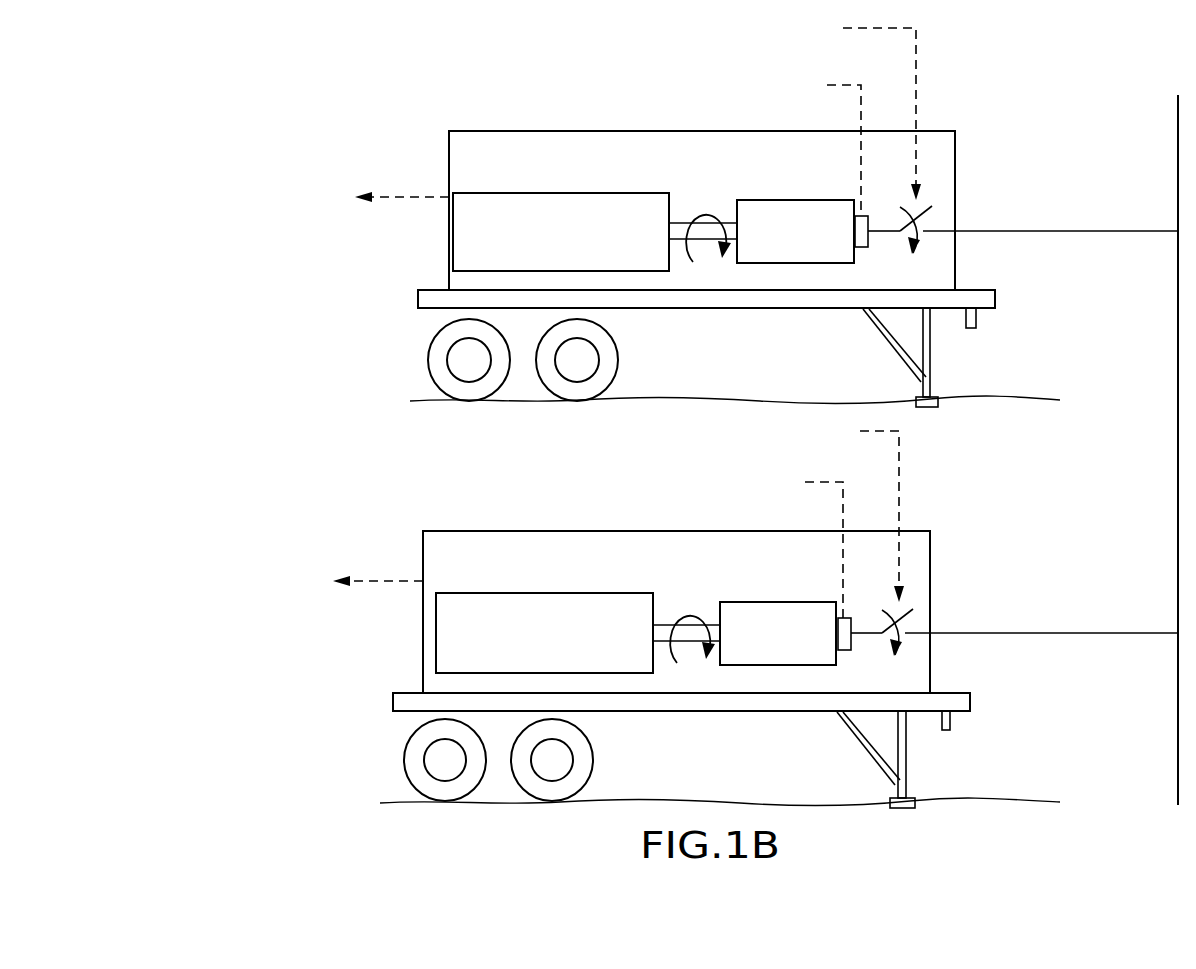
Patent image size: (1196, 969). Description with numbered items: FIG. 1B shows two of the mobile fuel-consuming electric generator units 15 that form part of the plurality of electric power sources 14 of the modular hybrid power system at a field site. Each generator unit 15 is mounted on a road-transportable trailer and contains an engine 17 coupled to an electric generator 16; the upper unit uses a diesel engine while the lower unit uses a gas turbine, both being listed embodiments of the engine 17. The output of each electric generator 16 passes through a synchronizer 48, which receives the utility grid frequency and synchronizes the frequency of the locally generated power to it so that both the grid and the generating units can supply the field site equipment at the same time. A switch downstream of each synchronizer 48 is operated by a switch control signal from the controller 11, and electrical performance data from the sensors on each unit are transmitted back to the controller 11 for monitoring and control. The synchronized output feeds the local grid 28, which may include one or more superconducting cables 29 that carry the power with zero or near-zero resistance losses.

The electric power sources 14 is at (306, 120).
The controller 11 is at (503, 315).
The mobile fuel-consuming electric generator unit 15 is at (608, 531).
The engine 17 is at (588, 193).
The electric generator 16 is at (850, 256).
The synchronizer 48 is at (862, 248).
The local grid 28 is at (1148, 231).
The superconducting cable 29 is at (1108, 232).